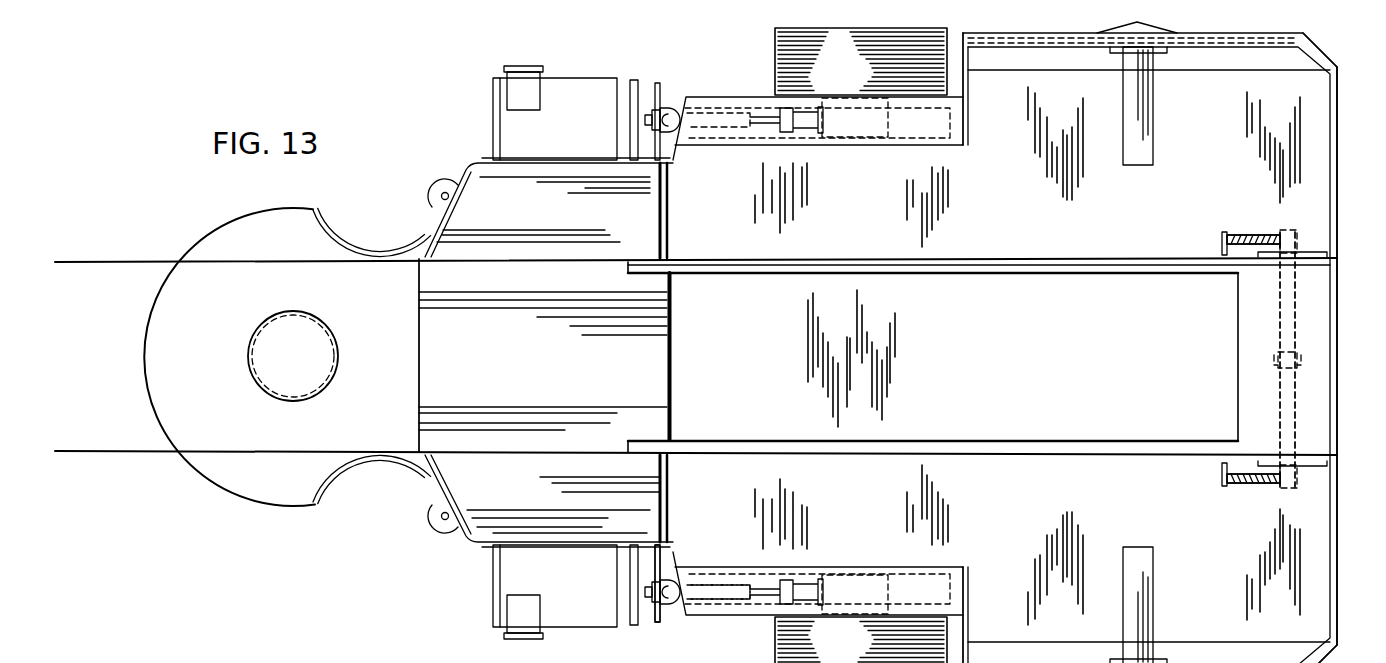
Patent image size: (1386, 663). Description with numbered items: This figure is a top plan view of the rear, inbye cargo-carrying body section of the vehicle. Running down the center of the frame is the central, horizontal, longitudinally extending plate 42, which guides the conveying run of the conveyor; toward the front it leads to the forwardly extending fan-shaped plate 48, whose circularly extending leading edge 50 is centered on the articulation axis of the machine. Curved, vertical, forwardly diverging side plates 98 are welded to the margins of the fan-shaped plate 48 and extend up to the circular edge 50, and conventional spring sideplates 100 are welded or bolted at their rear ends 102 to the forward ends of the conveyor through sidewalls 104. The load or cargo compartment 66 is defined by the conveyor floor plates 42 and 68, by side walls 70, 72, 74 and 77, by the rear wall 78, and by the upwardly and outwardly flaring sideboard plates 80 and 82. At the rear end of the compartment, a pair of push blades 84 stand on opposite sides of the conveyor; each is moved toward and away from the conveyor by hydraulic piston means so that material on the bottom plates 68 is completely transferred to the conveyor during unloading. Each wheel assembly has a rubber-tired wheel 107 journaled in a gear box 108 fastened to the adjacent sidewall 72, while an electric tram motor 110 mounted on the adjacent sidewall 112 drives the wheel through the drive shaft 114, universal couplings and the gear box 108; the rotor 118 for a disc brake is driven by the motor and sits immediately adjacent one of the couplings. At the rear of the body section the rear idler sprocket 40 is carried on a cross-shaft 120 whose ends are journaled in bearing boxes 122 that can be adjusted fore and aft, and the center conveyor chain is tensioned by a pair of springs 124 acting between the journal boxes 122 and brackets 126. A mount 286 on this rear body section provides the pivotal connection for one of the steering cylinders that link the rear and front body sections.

The rear idler sprocket 40 is at (1278, 360).
The central horizontal longitudinally extending plate 42 is at (996, 324).
The fan-shaped plate 48 is at (378, 343).
The circularly extending leading edge 50 is at (211, 236).
The load or cargo compartment 66 is at (1310, 620).
The conveyor floor plate 68 is at (1028, 231).
The side wall 70 is at (689, 140).
The side wall 72 is at (832, 143).
The side wall 74 is at (968, 100).
The side wall 77 is at (1312, 41).
The rear wall 78 is at (1337, 226).
The sideboard plate 80 is at (690, 131).
The sideboard plate 82 is at (952, 122).
The push blade 84 is at (1228, 60).
The curved vertical forwardly diverging side plate 98 is at (338, 229).
The spring sideplate 100 is at (108, 250).
The rear end of spring sideplate 102 is at (411, 443).
The sidewall 104 is at (536, 262).
The wheel 107 is at (858, 82).
The gear box 108 is at (888, 590).
The electric tram motor 110 is at (594, 116).
The sidewall 112 is at (530, 165).
The drive shaft 114 is at (718, 602).
The rotor for disc brake 118 is at (660, 626).
The cross-shaft 120 is at (1280, 390).
The bearing box 122 is at (1300, 232).
The spring 124 is at (1254, 232).
The bracket 126 is at (1222, 237).
The mount 286 is at (457, 520).